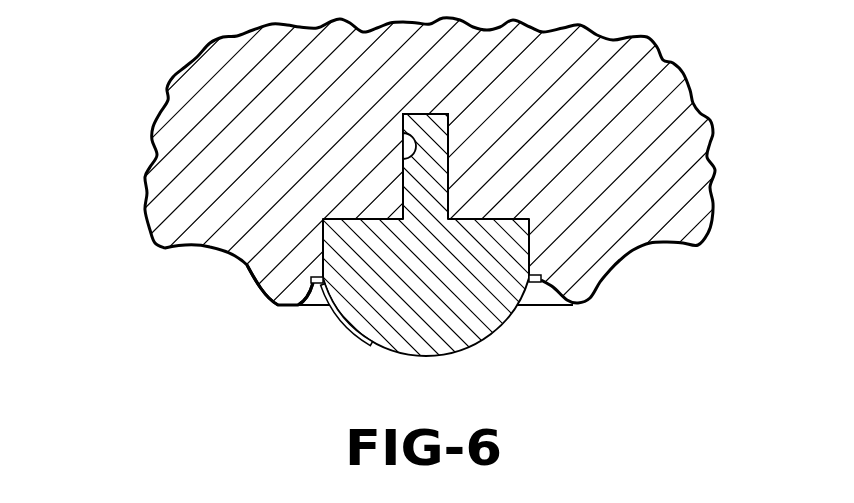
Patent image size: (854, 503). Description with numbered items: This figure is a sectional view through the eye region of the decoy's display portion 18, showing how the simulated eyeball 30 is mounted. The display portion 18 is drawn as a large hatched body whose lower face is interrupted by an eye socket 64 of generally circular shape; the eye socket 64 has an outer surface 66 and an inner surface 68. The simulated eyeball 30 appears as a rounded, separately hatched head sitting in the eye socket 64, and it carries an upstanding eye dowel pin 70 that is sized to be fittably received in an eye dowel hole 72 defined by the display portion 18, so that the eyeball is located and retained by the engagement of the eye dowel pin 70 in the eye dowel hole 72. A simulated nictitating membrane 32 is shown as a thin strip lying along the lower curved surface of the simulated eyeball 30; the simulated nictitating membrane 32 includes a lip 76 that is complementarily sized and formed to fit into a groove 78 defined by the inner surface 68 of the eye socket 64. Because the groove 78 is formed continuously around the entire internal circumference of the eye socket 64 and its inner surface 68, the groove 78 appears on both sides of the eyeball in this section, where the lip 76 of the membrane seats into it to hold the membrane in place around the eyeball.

The display portion 18 is at (160, 162).
The simulated eyeball 30 is at (482, 338).
The simulated nictitating membrane 32 is at (356, 333).
The eye socket 64 is at (268, 322).
The outer surface 66 is at (257, 291).
The inner surface 68 is at (314, 298).
The eye dowel pin 70 is at (432, 169).
The eye dowel hole 72 is at (401, 133).
The lip 76 is at (312, 280).
The groove 78 is at (578, 306).